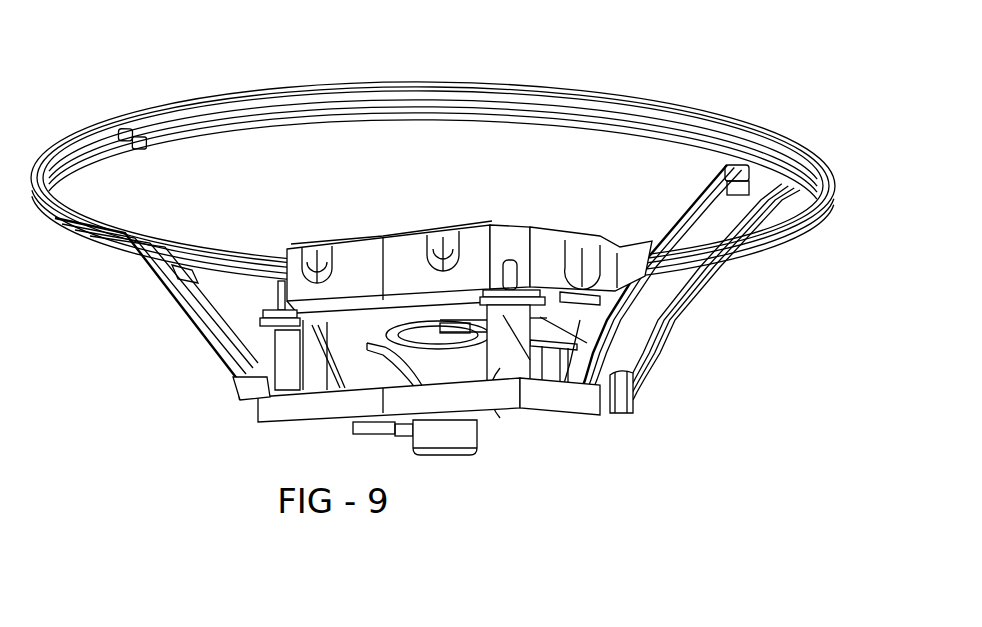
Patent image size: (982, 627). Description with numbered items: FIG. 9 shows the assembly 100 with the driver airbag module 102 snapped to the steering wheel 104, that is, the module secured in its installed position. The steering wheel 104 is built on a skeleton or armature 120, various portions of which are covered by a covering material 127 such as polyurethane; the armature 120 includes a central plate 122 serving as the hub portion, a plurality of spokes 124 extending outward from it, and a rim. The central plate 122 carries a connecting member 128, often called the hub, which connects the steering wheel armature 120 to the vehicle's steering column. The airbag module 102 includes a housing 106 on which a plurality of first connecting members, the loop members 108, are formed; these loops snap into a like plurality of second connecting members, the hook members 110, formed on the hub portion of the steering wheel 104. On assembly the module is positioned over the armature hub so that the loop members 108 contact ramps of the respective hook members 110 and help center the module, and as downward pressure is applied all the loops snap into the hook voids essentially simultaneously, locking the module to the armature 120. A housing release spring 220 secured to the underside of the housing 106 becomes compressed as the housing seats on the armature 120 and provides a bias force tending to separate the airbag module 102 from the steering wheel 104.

The assembly 100 is at (439, 293).
The driver airbag module 102 is at (313, 238).
The steering wheel 104 is at (466, 68).
The housing 106 is at (411, 255).
The loop members 108 is at (257, 412).
The hook members 110 is at (284, 366).
The armature 120 is at (783, 232).
The central plate 122 is at (310, 403).
The spokes 124 is at (163, 290).
The covering material 127 is at (599, 94).
The connecting member 128 is at (433, 437).
The housing release spring 220 is at (263, 362).